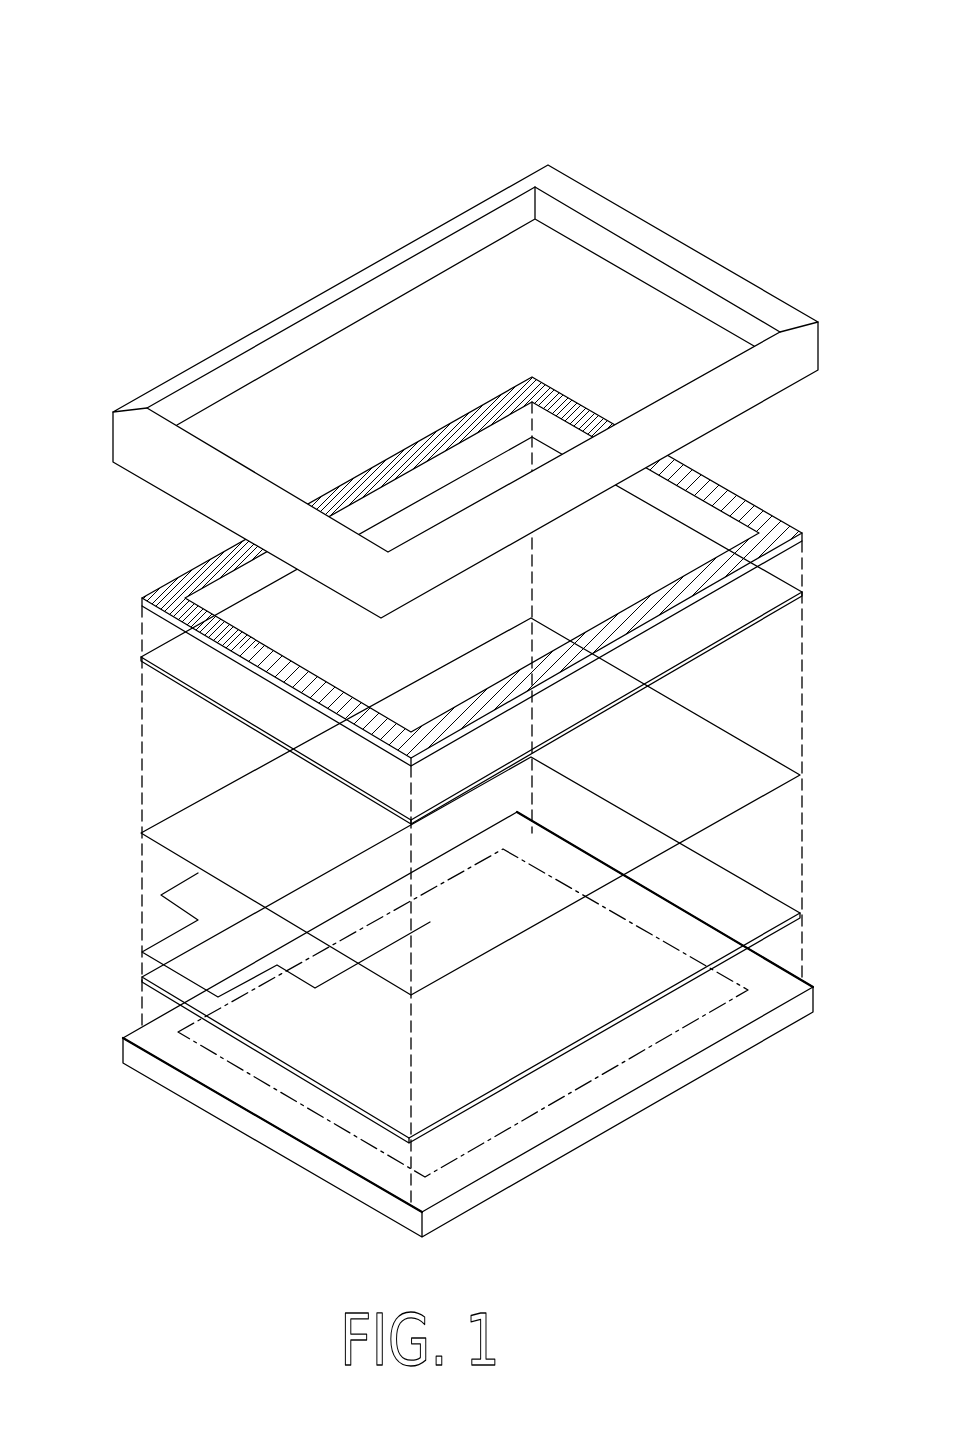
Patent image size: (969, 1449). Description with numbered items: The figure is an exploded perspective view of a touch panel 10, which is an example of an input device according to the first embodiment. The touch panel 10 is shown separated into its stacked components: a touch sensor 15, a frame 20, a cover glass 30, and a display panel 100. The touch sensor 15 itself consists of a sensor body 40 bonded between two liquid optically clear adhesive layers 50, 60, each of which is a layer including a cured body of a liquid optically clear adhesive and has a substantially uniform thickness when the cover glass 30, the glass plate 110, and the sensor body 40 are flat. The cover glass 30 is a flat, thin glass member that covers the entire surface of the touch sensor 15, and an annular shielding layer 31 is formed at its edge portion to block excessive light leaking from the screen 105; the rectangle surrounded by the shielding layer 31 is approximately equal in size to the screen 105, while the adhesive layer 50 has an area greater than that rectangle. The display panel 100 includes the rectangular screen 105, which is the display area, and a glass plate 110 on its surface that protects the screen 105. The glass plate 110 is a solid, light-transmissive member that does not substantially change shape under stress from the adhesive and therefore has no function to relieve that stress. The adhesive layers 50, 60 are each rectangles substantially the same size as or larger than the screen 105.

The touch panel 10 is at (268, 88).
The touch sensor 15 is at (88, 992).
The frame 20 is at (274, 318).
The cover glass 30 is at (206, 561).
The shielding layer 31 is at (584, 392).
The sensor body 40 is at (237, 785).
The liquid optically clear adhesive layer 50 is at (168, 636).
The liquid optically clear adhesive layer 60 is at (163, 978).
The display panel 100 is at (223, 1104).
The screen 105 is at (590, 1085).
The glass plate 110 is at (543, 1136).